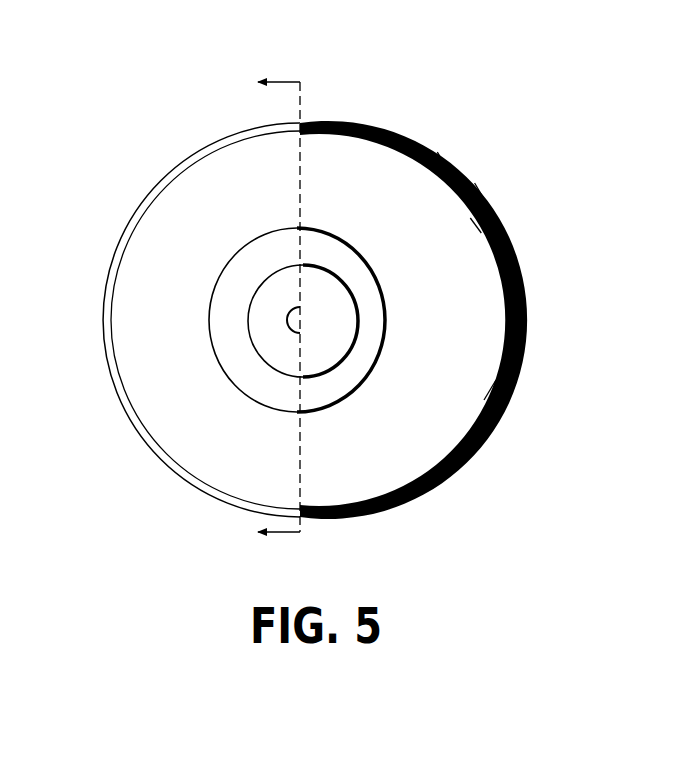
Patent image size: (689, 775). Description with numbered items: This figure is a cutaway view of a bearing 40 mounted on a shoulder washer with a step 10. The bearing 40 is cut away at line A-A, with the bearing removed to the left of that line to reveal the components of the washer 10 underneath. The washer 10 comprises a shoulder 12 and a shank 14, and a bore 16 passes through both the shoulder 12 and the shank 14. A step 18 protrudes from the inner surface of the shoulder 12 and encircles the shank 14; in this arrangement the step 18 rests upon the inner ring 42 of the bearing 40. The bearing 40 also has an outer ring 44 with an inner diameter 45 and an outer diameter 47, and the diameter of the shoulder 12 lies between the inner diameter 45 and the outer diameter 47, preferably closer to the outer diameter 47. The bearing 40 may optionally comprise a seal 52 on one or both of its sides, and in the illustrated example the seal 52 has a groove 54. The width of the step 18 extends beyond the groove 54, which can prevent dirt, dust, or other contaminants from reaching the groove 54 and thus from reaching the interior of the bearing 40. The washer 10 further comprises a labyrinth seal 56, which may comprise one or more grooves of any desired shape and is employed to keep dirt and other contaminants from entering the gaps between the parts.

The shoulder washer with a step 10 is at (310, 309).
The shoulder 12 is at (281, 300).
The shank 14 is at (276, 329).
The bore 16 is at (288, 303).
The step 18 is at (258, 367).
The bearing 40 is at (422, 294).
The inner ring 42 is at (344, 287).
The outer ring 44 is at (450, 167).
The inner diameter of the outer ring 45 is at (472, 218).
The outer diameter of the outer ring 47 is at (486, 205).
The seal 52 is at (430, 388).
The groove 54 is at (323, 236).
The labyrinth seal 56 is at (124, 287).